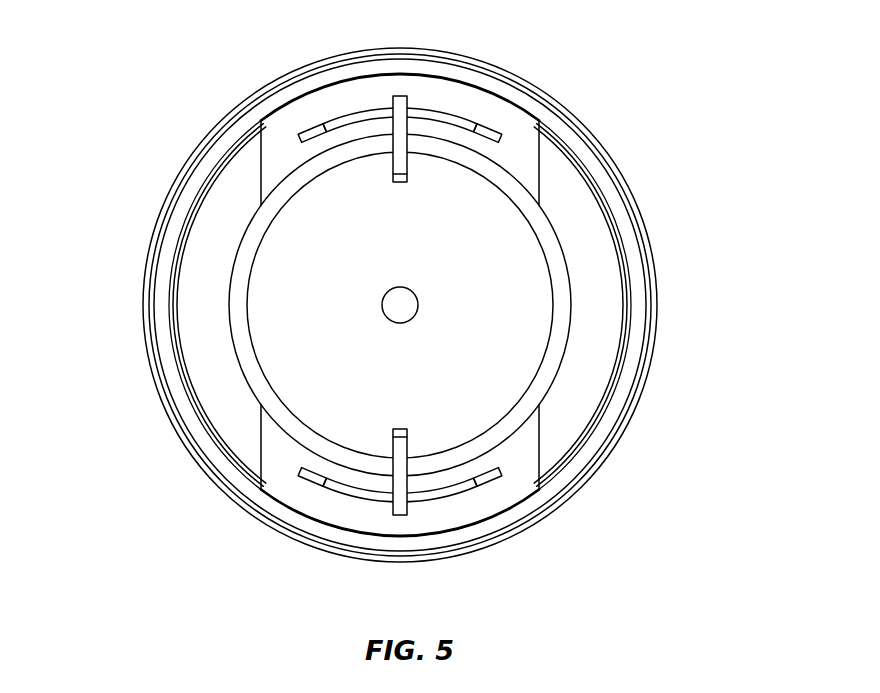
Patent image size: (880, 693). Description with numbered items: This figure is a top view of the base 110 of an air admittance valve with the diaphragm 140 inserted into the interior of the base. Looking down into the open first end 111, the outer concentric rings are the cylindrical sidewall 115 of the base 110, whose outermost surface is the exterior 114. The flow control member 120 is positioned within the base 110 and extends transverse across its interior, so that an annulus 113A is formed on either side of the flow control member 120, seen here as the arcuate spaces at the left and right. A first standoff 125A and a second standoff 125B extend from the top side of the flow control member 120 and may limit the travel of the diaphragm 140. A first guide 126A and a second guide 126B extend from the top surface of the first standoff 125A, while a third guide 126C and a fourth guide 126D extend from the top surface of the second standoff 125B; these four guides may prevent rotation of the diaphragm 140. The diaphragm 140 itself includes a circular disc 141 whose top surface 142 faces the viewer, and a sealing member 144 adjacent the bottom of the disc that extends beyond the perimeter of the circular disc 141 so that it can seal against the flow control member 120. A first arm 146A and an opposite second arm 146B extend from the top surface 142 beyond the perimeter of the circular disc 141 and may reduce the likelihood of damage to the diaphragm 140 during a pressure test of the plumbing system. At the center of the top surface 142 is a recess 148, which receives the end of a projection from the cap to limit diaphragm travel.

The base 110 is at (153, 74).
The first end 111 is at (580, 120).
The annulus 113A is at (220, 383).
The exterior 114 is at (662, 292).
The sidewall 115 is at (400, 305).
The flow control member 120 is at (272, 470).
The first standoff 125A is at (371, 110).
The second standoff 125B is at (363, 498).
The first guide 126A is at (312, 128).
The second guide 126B is at (487, 132).
The third guide 126C is at (313, 488).
The fourth guide 126D is at (488, 488).
The diaphragm 140 is at (326, 305).
The circular disc 141 is at (270, 257).
The top surface 142 is at (333, 337).
The sealing member 144 is at (255, 220).
The first arm 146A is at (399, 122).
The second arm 146B is at (402, 490).
The recess 148 is at (418, 298).